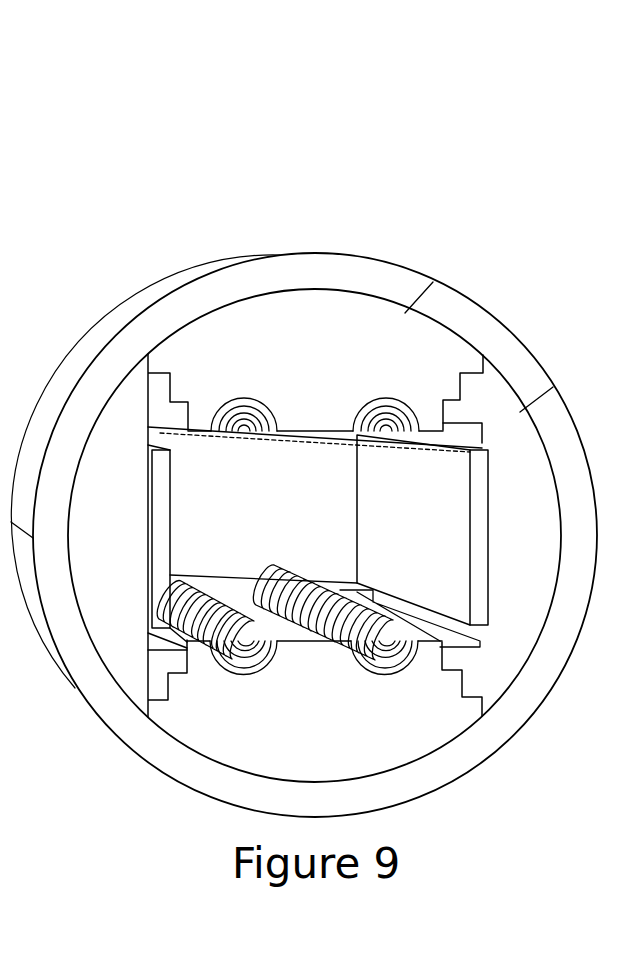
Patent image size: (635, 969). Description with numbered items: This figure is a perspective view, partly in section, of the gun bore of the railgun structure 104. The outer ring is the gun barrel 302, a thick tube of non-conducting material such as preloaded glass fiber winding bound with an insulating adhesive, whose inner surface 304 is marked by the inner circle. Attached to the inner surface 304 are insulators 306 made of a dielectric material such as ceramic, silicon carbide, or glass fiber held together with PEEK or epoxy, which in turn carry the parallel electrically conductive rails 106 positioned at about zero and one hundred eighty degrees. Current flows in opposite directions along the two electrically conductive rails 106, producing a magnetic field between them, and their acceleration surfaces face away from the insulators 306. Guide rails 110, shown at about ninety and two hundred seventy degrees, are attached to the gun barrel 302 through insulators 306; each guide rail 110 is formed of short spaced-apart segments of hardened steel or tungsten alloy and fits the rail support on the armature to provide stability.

The railgun structure 104 is at (580, 63).
The gun barrel 302 is at (305, 253).
The inner surface 304 is at (340, 290).
The insulator 306 is at (120, 398).
The electrically conductive rails 106 is at (148, 522).
The guide rail 110 is at (255, 410).